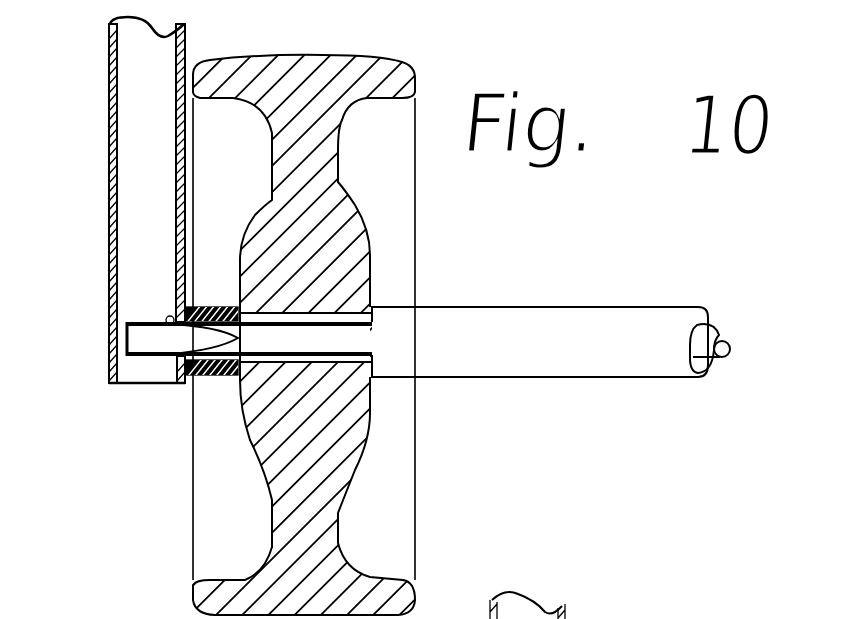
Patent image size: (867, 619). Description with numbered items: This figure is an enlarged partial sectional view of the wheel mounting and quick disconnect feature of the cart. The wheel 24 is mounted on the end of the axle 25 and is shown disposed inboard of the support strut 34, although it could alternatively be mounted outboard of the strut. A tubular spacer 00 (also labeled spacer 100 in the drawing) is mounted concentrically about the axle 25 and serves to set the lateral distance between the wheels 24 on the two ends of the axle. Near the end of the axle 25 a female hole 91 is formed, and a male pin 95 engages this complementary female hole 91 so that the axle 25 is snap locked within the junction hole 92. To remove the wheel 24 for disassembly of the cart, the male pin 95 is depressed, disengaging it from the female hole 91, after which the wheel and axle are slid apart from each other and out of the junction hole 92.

The support strut 34 is at (137, 100).
The wheel 24 is at (370, 58).
The rod 100 is at (480, 295).
The tubular spacer 00 is at (211, 395).
The female hole 91 is at (156, 315).
The male pin 95 is at (167, 302).
The junction hole 92 is at (146, 368).
The axle 25 is at (740, 315).